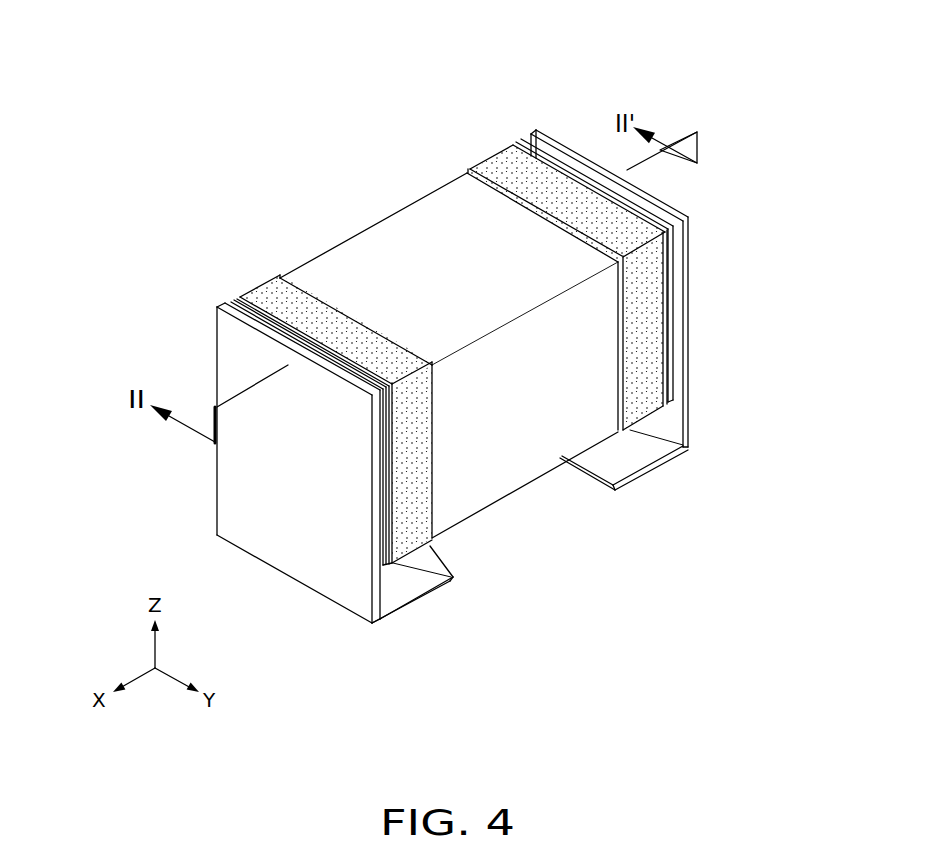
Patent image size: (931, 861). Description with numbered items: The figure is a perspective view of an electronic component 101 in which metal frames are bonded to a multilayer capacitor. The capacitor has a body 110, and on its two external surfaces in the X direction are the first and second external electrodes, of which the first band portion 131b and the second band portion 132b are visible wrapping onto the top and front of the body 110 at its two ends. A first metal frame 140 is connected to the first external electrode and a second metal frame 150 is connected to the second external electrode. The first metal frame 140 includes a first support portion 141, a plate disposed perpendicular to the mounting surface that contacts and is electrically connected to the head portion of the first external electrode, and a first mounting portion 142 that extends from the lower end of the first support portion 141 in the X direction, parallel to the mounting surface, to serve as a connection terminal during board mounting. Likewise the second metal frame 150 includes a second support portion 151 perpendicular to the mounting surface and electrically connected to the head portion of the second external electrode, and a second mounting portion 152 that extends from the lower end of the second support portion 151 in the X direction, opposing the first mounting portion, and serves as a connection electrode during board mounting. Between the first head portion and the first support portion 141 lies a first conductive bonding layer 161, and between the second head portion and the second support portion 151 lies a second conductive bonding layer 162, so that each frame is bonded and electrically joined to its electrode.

The electronic component 101 is at (288, 41).
The body 110 is at (387, 241).
The first band portion 131b is at (263, 297).
The second band portion 132b is at (503, 160).
The first conductive bonding layer 161 is at (235, 294).
The second conductive bonding layer 162 is at (547, 152).
The first metal frame 140 is at (301, 477).
The first support portion 141 is at (235, 502).
The first mounting portion 142 is at (393, 588).
The second metal frame 150 is at (668, 322).
The second support portion 151 is at (673, 414).
The second mounting portion 152 is at (632, 456).